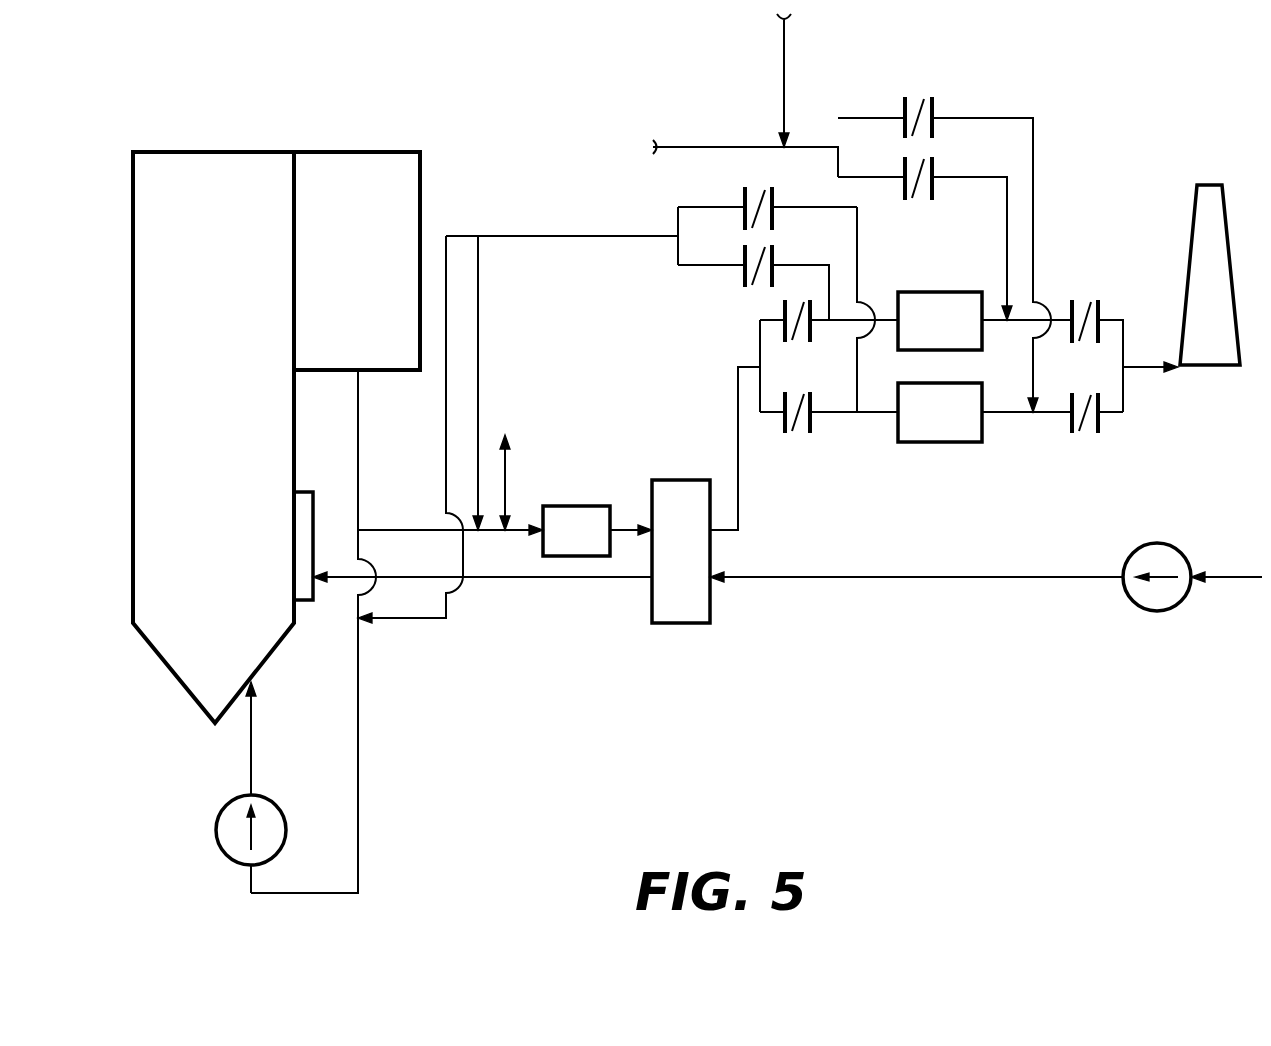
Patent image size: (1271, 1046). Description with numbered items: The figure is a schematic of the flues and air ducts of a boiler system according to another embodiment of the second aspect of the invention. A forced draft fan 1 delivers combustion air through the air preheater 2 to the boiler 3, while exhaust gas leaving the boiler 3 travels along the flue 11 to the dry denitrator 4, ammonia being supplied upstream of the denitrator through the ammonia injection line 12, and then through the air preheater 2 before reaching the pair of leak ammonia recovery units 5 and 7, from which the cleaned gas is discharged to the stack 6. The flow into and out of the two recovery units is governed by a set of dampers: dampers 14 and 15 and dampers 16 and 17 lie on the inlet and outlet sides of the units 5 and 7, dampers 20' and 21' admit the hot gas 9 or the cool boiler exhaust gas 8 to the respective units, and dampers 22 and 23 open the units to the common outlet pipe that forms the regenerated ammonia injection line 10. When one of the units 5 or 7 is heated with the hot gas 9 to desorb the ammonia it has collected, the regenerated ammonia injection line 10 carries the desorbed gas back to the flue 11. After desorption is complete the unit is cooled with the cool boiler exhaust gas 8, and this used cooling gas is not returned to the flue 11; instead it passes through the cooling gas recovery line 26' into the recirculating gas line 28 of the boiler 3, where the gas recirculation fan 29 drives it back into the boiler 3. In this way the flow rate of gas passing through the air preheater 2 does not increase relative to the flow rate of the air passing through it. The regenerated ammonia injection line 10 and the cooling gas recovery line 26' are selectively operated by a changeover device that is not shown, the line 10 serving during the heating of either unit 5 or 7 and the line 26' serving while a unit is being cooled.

The forced draft fan 1 is at (1176, 546).
The air preheater 2 is at (673, 623).
The boiler 3 is at (302, 152).
The dry denitrator 4 is at (563, 506).
The ammonia recovery unit 5 is at (927, 442).
The stack 6 is at (1225, 365).
The ammonia recovery unit 7 is at (930, 292).
The cool boiler exhaust gas 8 is at (786, 53).
The hot gas 9 is at (730, 147).
The regenerated ammonia injection line 10 is at (478, 338).
The flue 11 is at (498, 530).
The ammonia injection line 12 is at (508, 466).
The damper 14 is at (782, 425).
The damper 15 is at (800, 337).
The damper 16 is at (1072, 427).
The damper 17 is at (1102, 305).
The damper 20' is at (925, 227).
The damper 21' is at (944, 244).
The damper 22 is at (745, 268).
The damper 23 is at (745, 213).
The cooling gas recovery line 26' is at (410, 429).
The recirculating gas line 28 is at (360, 753).
The gas recirculation fan 29 is at (222, 850).